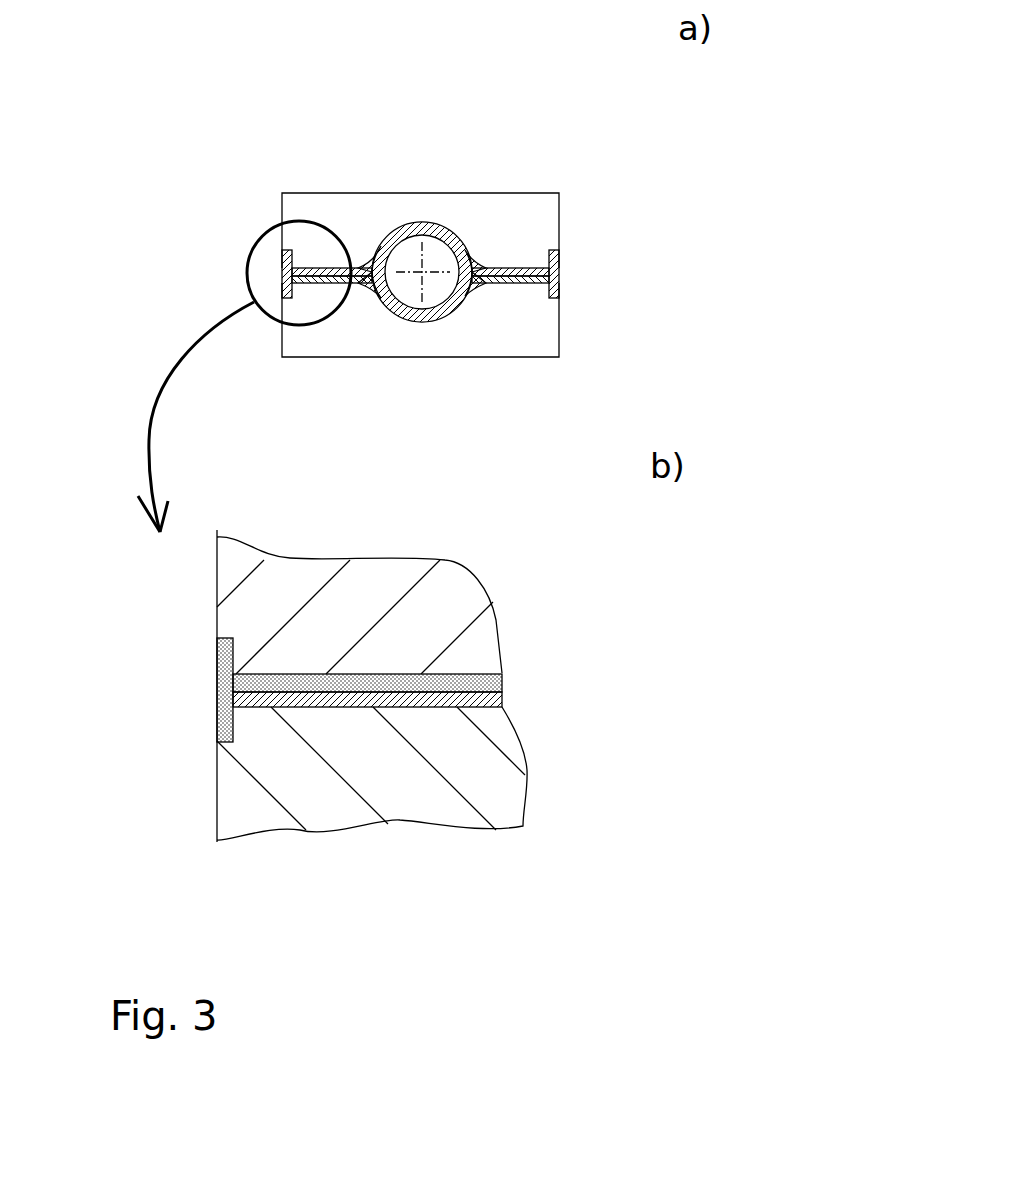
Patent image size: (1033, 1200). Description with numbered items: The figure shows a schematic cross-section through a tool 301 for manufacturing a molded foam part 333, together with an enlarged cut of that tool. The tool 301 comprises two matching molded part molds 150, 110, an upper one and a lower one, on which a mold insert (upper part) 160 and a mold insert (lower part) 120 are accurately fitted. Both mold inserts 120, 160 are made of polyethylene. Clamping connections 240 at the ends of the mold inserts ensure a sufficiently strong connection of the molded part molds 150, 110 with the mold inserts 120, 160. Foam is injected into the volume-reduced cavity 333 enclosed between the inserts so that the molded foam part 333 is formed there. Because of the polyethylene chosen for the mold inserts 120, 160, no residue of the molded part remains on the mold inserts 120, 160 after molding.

In FIG. 3a, the molded part mold 110 is at (343, 327).
In FIG. 3b, the molded part mold 110 is at (335, 822).
In FIG. 3a, the mold insert (lower part) 120 is at (463, 300).
In FIG. 3b, the mold insert (lower part) 120 is at (503, 707).
In FIG. 3a, the molded part mold 150 is at (355, 212).
In FIG. 3b, the molded part mold 150 is at (300, 573).
In FIG. 3a, the mold insert (upper part) 160 is at (375, 257).
In FIG. 3b, the mold insert (upper part) 160 is at (502, 663).
In FIG. 3a, the clamping connections 240 is at (290, 296).
In FIG. 3b, the clamping connections 240 is at (225, 676).
In FIG. 3a, the tool 301 is at (458, 170).
In FIG. 3a, the molded foam part 333 is at (446, 243).